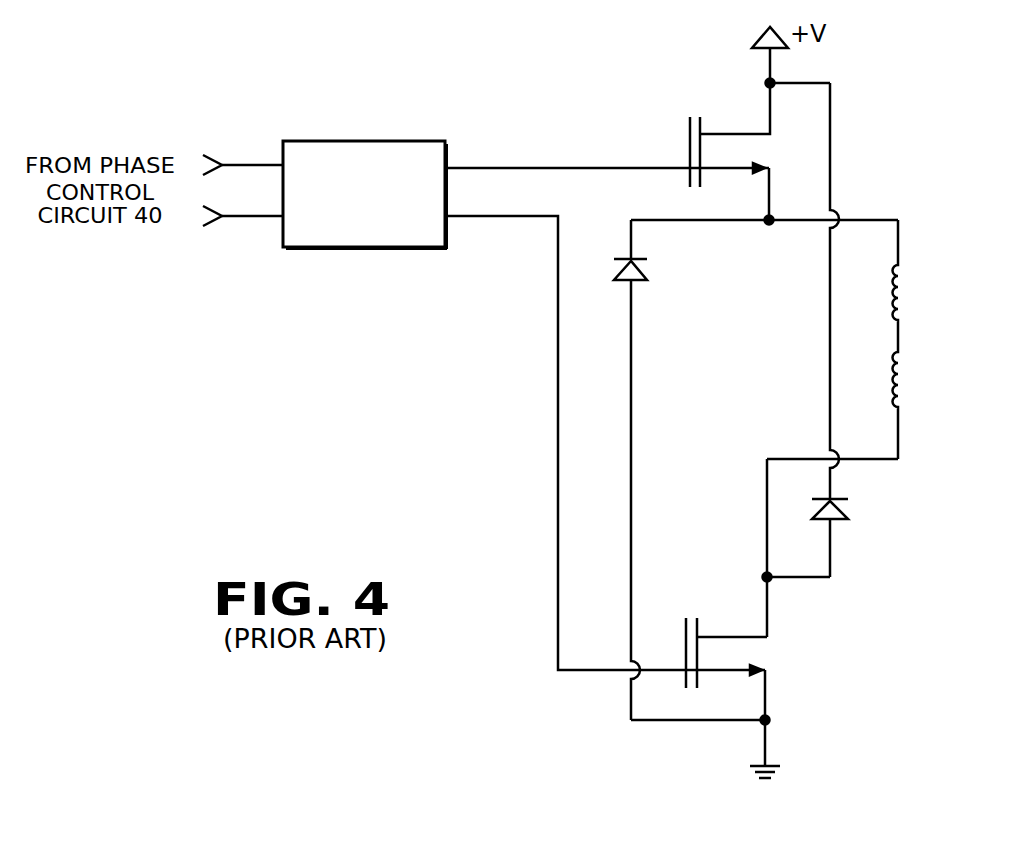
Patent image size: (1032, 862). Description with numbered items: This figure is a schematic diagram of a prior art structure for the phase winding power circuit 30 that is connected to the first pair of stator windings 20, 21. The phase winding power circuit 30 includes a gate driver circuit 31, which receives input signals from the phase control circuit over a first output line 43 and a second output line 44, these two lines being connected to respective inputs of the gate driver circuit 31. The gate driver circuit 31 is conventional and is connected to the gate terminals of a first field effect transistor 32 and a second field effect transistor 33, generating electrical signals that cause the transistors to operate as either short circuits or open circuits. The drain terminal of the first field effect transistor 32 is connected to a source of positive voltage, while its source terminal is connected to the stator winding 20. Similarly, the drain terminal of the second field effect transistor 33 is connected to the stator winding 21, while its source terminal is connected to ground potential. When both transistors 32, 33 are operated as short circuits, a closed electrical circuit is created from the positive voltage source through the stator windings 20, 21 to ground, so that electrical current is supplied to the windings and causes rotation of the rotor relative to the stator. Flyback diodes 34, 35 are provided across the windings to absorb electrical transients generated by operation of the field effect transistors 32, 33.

The stator winding 20 is at (890, 288).
The stator winding 21 is at (890, 395).
The phase winding power circuit 30 is at (440, 77).
The gate driver circuit 31 is at (408, 249).
The first field effect transistor 32 is at (690, 135).
The second field effect transistor 33 is at (685, 640).
The flyback diode 34 is at (645, 272).
The flyback diode 35 is at (843, 509).
The first output line 43 is at (247, 163).
The second output line 44 is at (243, 218).